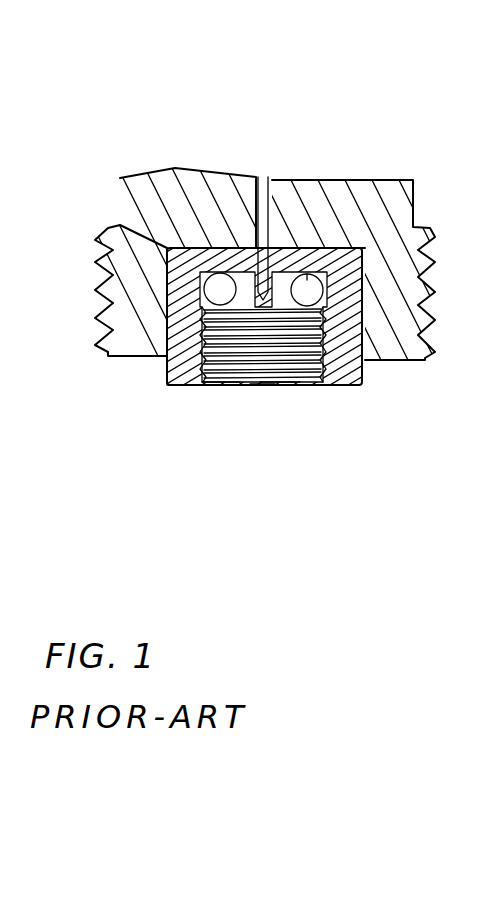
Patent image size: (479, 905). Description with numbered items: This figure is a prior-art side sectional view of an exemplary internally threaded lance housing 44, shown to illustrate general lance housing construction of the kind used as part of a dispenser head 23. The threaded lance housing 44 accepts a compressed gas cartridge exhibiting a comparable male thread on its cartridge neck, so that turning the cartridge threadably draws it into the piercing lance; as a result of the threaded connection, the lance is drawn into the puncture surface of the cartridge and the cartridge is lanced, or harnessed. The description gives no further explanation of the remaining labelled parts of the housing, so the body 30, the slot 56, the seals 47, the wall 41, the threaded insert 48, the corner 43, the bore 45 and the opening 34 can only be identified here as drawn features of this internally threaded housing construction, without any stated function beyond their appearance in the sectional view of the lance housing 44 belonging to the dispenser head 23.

The dispenser head 23 is at (110, 146).
The threaded body 30 is at (90, 303).
The slot 56 is at (268, 178).
The O-ring seals 47 is at (307, 283).
The housing 41 is at (303, 385).
The threaded insert 48 is at (267, 303).
The internally threaded lance housing 44 is at (175, 382).
The bottom wall 43 is at (222, 385).
The bore 45 is at (288, 337).
The bottom opening 34 is at (262, 395).